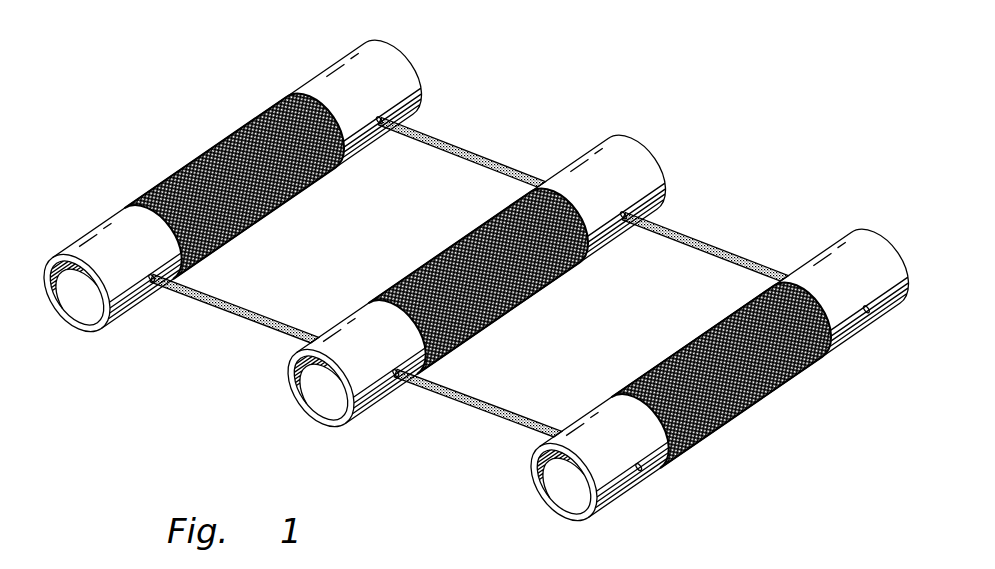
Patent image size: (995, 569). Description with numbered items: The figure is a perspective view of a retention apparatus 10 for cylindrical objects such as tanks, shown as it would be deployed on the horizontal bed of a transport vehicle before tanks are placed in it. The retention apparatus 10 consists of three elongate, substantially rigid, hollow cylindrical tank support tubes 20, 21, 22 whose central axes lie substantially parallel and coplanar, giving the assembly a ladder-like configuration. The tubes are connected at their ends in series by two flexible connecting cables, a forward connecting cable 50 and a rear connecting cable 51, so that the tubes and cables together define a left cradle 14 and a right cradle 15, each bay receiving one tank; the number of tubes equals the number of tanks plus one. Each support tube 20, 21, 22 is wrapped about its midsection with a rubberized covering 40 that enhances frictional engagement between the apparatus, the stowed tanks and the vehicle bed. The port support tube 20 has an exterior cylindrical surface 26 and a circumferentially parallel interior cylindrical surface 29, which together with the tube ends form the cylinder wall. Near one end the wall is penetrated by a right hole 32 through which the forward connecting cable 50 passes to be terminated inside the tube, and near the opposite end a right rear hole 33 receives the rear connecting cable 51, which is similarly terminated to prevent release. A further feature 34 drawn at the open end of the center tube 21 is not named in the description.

The retention apparatus 10 is at (205, 85).
The left cradle 14 is at (655, 172).
The right cradle 15 is at (885, 237).
The port support tube 20 is at (73, 221).
The tank support tube 21 is at (268, 365).
The tank support tube 22 is at (514, 458).
The exterior cylindrical surface 26 is at (130, 257).
The interior cylindrical surface 29 is at (66, 296).
The right hole 32 is at (387, 372).
The right rear hole 33 is at (613, 212).
The tube end rim 34 is at (330, 420).
The rubberized covering 40 is at (456, 209).
The forward connecting cable 50 is at (448, 138).
The rear connecting cable 51 is at (230, 311).